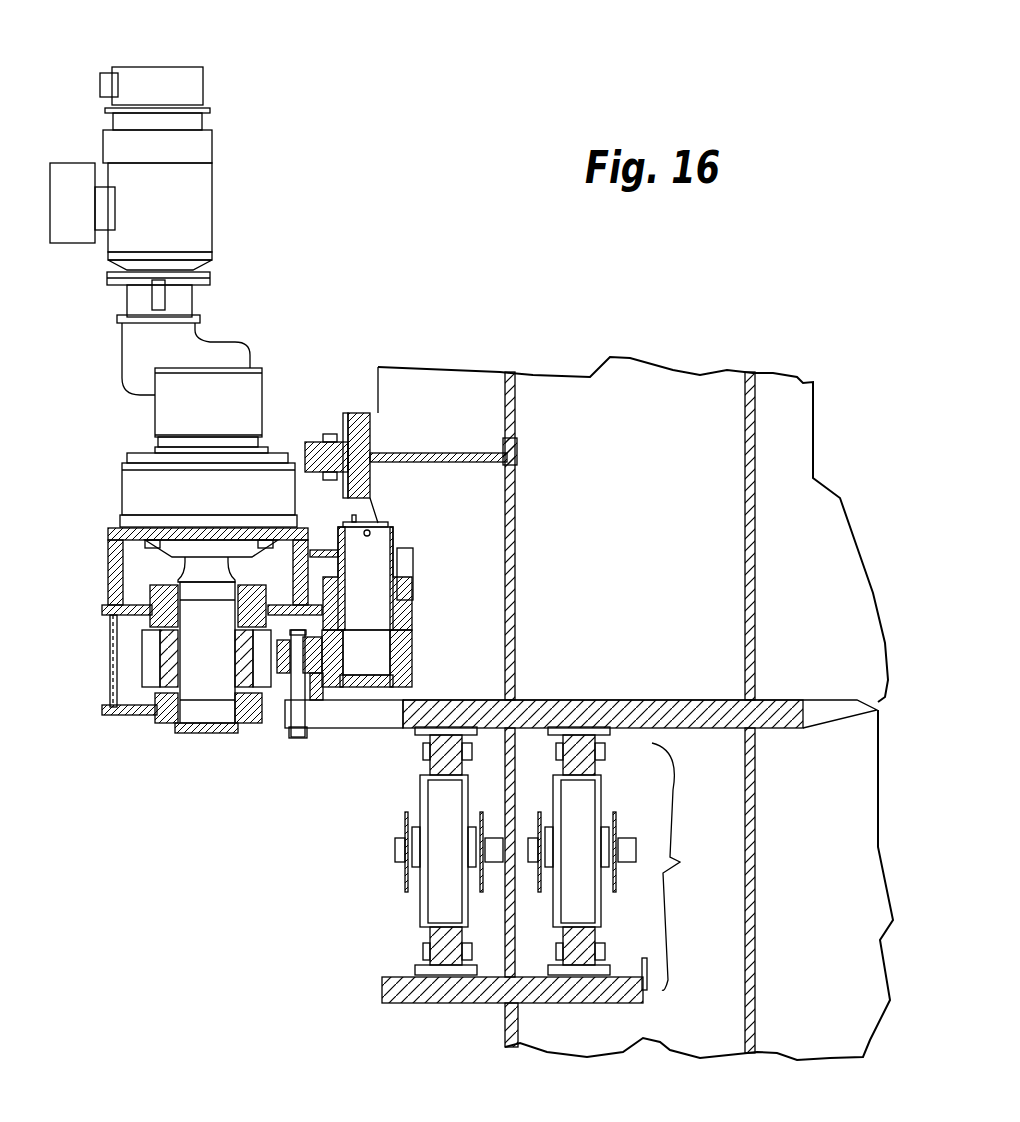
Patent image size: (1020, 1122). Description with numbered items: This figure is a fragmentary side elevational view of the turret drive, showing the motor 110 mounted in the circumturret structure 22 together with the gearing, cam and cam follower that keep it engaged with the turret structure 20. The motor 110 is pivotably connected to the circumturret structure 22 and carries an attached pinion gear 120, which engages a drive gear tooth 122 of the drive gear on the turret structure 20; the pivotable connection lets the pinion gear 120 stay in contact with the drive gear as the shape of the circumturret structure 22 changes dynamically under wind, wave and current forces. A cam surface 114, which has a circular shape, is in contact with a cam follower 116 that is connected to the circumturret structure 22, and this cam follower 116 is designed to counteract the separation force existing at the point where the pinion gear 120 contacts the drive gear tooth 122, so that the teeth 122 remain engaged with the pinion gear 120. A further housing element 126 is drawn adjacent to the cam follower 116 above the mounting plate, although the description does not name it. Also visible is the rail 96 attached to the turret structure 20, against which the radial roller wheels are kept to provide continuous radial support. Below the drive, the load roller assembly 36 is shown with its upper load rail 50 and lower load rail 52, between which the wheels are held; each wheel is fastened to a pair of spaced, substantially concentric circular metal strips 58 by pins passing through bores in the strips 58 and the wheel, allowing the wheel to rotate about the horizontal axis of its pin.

The motor 110 is at (188, 222).
The rail 96 is at (307, 438).
The coupling housing 126 is at (372, 606).
The cam follower 116 is at (413, 668).
The cam surface 114 is at (305, 700).
The pinion gear 120 is at (252, 723).
The drive gear teeth 122 is at (283, 738).
The turret structure 20 is at (537, 708).
The load roller assembly 36 is at (667, 900).
The upper load rail 50 is at (588, 757).
The circular metal strips 58 is at (435, 900).
The lower load rail 52 is at (597, 928).
The circumturret structure 22 is at (407, 985).